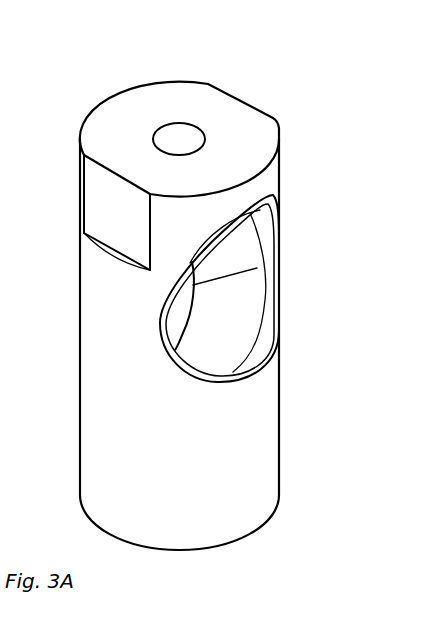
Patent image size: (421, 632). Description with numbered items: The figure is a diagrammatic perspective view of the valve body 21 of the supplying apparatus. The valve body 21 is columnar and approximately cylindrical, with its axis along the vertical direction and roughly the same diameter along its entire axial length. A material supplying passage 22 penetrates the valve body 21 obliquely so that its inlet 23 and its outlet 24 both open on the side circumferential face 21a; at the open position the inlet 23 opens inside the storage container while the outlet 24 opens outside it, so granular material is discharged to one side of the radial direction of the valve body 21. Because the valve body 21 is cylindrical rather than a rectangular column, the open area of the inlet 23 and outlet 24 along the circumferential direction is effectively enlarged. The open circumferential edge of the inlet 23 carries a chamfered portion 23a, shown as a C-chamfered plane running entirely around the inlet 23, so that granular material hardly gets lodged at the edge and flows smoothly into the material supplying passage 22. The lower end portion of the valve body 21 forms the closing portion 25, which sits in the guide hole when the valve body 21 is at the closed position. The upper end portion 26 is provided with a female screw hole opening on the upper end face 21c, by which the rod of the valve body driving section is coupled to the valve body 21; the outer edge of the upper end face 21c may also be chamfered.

The valve body 21 is at (85, 70).
The side circumferential face 21a is at (265, 434).
The upper end face 21c is at (243, 123).
The material supplying passage 22 is at (253, 302).
The inlet 23 is at (252, 288).
The chamfered portion 23a is at (265, 351).
The outlet 24 is at (183, 333).
The closing portion 25 is at (232, 536).
The upper end portion 26 is at (268, 182).